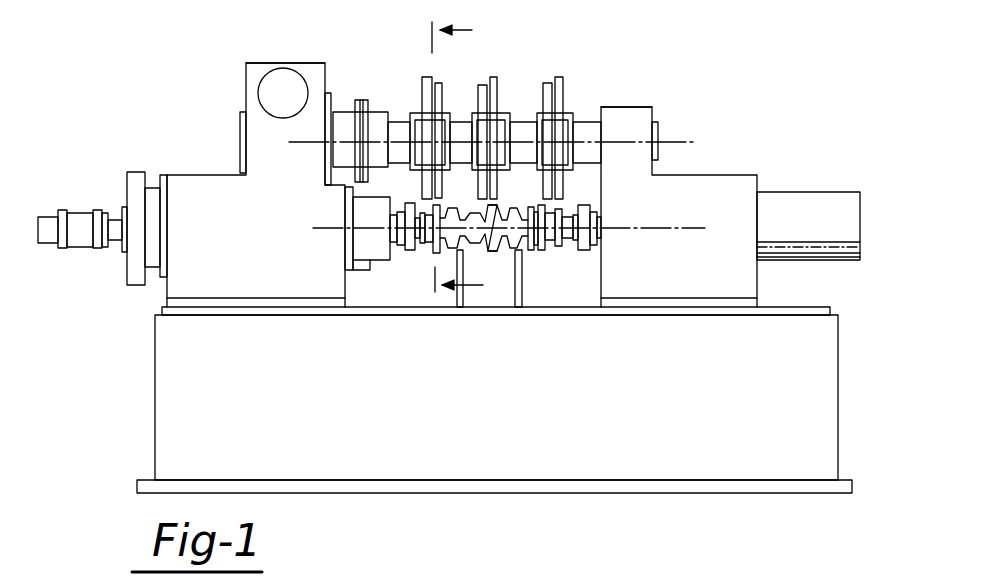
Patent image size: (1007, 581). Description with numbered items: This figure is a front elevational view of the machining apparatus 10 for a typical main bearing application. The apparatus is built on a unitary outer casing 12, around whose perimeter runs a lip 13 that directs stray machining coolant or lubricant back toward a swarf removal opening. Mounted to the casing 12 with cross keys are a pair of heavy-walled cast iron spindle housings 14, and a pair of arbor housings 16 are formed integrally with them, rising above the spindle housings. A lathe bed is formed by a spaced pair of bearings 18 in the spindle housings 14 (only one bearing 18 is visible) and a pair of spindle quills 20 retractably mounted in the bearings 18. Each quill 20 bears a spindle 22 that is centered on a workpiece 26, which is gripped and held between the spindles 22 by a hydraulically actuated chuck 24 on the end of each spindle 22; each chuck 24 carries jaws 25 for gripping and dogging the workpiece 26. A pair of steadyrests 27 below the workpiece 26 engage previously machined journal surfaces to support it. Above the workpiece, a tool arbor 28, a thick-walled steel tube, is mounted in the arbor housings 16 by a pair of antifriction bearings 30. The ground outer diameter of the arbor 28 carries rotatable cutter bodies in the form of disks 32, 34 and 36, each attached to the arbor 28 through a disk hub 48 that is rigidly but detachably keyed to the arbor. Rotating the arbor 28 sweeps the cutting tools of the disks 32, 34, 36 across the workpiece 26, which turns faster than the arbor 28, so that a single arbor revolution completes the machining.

The machining apparatus 10 is at (170, 104).
The unitary outer casing 12 is at (155, 402).
The lip 13 is at (493, 282).
The spindle housings 14 is at (197, 173).
The arbor housings 16 is at (246, 70).
The bearings 18 is at (345, 268).
The spindle quills 20 is at (398, 257).
The spindle 22 is at (400, 252).
The chuck 24 is at (410, 252).
The jaws 25 is at (420, 210).
The workpiece 26 is at (519, 204).
The steadyrests 27 is at (471, 303).
The tool arbor 28 is at (523, 120).
The antifriction bearings 30 is at (241, 113).
The disk 32 is at (420, 70).
The disk 34 is at (477, 72).
The disk 36 is at (556, 66).
The disk hub 48 is at (420, 100).